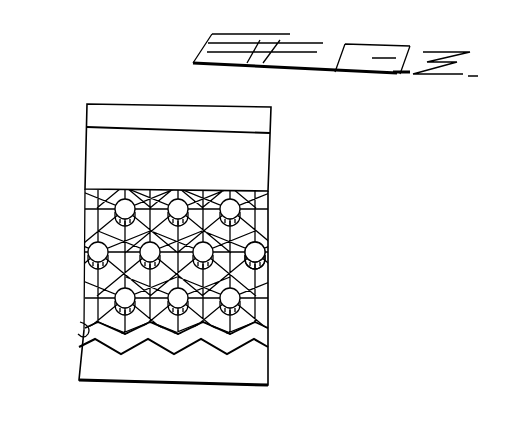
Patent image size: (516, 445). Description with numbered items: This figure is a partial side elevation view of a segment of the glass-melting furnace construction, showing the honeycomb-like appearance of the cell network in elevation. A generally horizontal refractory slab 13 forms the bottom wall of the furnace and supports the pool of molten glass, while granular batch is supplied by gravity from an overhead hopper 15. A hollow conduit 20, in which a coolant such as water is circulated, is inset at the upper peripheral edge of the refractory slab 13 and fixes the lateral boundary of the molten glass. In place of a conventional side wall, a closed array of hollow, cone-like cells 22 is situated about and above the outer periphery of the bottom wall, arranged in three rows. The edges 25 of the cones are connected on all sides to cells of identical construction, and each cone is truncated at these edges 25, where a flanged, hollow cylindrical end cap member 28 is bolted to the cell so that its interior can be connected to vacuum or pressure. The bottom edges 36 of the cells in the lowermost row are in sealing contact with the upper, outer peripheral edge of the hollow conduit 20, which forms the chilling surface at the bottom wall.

The refractory slab 13 is at (185, 372).
The overhead hopper 15 is at (283, 135).
The hollow conduit 20 is at (262, 342).
The cone-like cells 22 is at (150, 190).
The edges of the cones 25 is at (270, 226).
The end cap member 28 is at (243, 286).
The bottom edges of cells 36 is at (86, 331).